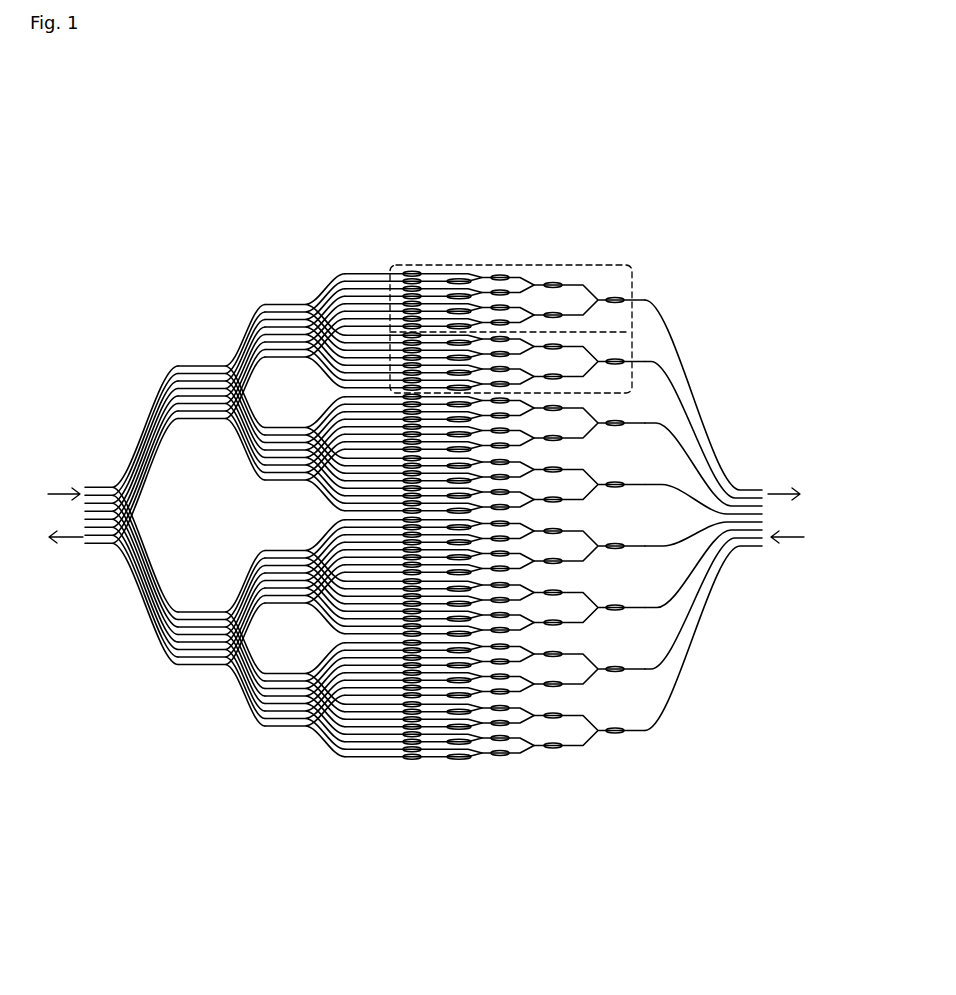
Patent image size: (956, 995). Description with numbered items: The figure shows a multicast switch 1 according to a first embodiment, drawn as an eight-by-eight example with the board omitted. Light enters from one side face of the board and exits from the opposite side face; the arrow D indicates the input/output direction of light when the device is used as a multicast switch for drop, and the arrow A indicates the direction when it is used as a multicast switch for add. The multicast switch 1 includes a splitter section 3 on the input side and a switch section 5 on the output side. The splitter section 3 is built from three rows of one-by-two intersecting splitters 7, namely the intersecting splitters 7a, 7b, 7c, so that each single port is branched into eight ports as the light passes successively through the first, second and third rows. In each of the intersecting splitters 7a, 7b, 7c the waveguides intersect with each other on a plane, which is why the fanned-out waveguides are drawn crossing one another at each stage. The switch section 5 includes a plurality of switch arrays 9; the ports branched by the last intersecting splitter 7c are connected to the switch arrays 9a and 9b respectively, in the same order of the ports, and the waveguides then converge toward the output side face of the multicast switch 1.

The multicast switch 1 is at (495, 160).
The splitter section 3 is at (377, 862).
The switch section 5 is at (702, 862).
The intersecting splitter 7 is at (231, 519).
The intersecting splitter 7a is at (118, 560).
The intersecting splitter 7b is at (270, 302).
The intersecting splitter 7c is at (283, 765).
The switch array 9 is at (540, 481).
The switch array 9a is at (418, 262).
The switch array 9b is at (646, 345).